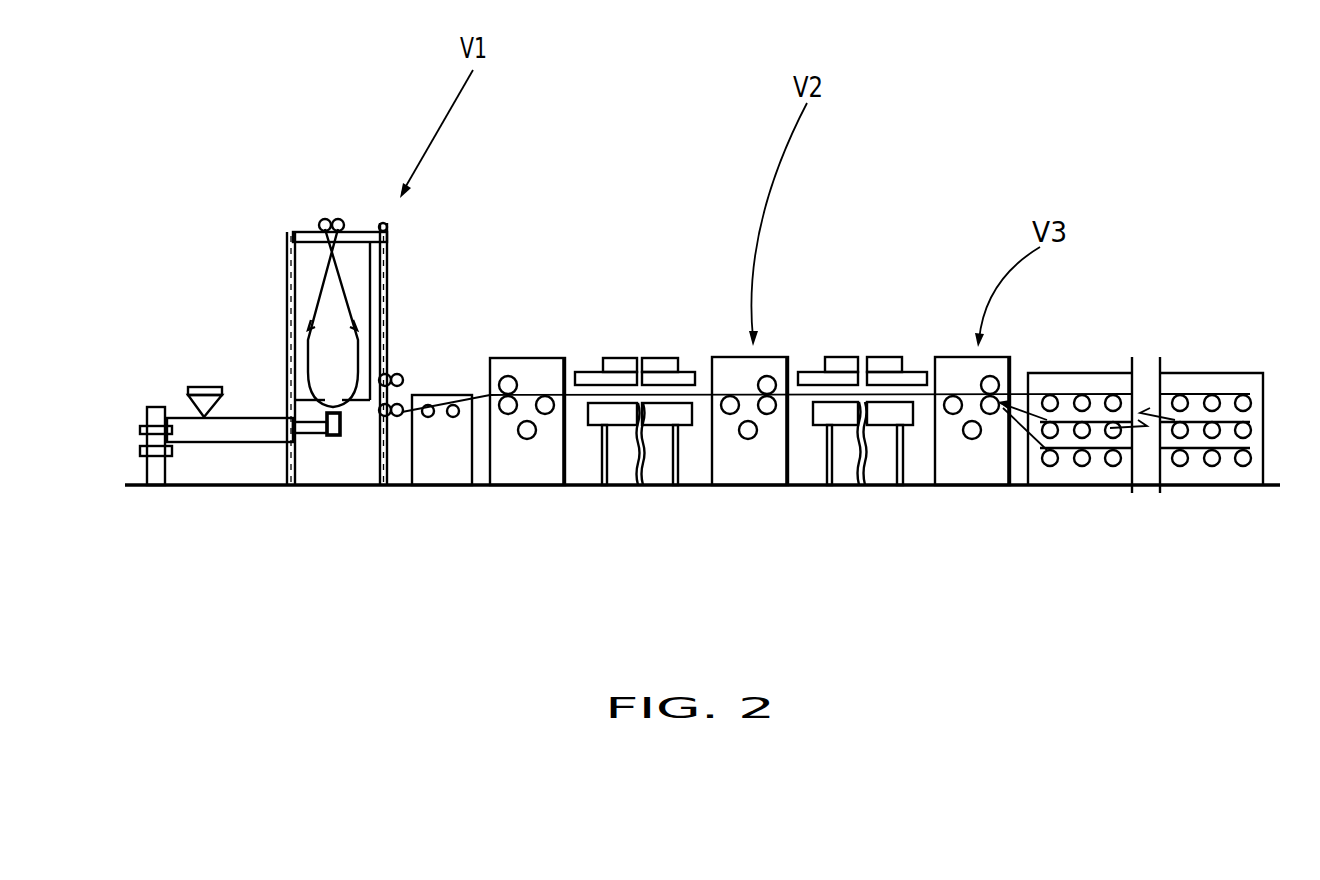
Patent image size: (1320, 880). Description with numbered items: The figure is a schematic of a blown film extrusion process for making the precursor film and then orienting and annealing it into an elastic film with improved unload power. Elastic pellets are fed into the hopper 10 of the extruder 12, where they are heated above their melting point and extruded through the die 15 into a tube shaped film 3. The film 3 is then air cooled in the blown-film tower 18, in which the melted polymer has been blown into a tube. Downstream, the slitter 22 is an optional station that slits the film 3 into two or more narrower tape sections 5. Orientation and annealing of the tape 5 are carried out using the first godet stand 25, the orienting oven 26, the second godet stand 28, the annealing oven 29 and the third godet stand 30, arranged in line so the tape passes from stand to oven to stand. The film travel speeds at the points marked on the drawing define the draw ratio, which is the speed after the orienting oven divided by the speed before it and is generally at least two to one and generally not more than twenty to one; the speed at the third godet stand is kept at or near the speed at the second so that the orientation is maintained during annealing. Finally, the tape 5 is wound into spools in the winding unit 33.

The tube shaped film 3 is at (380, 318).
The tape sections 5 is at (478, 393).
The hopper 10 is at (190, 398).
The extruder 12 is at (255, 418).
The die 15 is at (332, 412).
The blown-film tower 18 is at (313, 231).
The slitter 22 is at (443, 485).
The first godet stand 25 is at (528, 485).
The orienting oven 26 is at (610, 355).
The second godet stand 28 is at (755, 485).
The annealing oven 29 is at (883, 355).
The third godet stand 30 is at (977, 485).
The winding unit 33 is at (1193, 485).